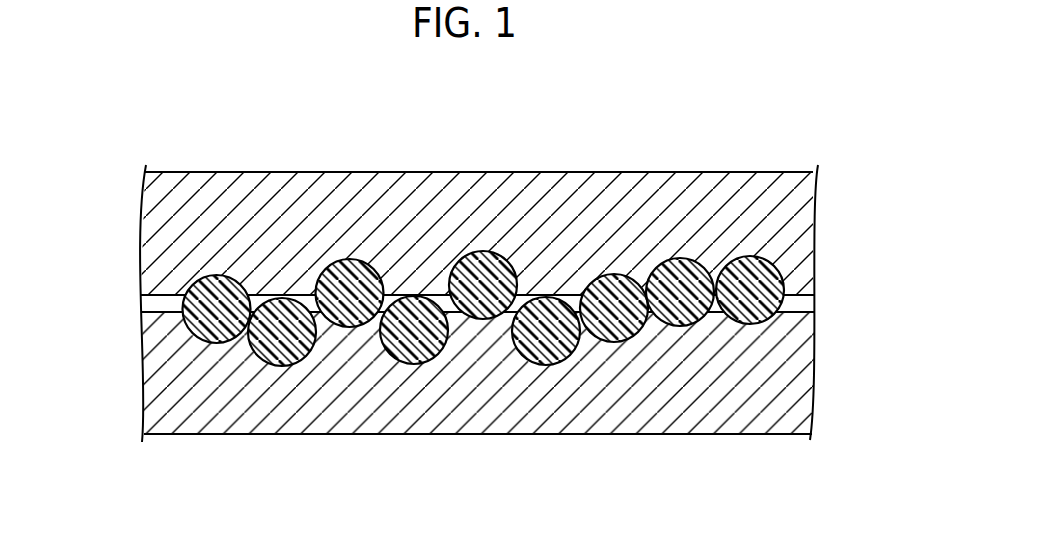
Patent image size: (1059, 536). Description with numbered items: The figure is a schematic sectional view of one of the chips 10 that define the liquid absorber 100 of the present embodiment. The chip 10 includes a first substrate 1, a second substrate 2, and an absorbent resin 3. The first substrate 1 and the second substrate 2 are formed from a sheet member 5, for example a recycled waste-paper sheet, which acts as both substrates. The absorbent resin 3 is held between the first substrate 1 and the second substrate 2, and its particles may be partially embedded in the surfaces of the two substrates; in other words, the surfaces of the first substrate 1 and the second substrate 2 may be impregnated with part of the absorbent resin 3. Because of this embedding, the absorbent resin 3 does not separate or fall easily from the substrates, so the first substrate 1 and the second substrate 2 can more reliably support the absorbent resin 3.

The liquid absorber 100 is at (746, 96).
The chip 10 is at (736, 152).
The sheet member 5 is at (435, 339).
The second substrate 2 is at (155, 233).
The first substrate 1 is at (155, 382).
The absorbent resin 3 is at (213, 315).